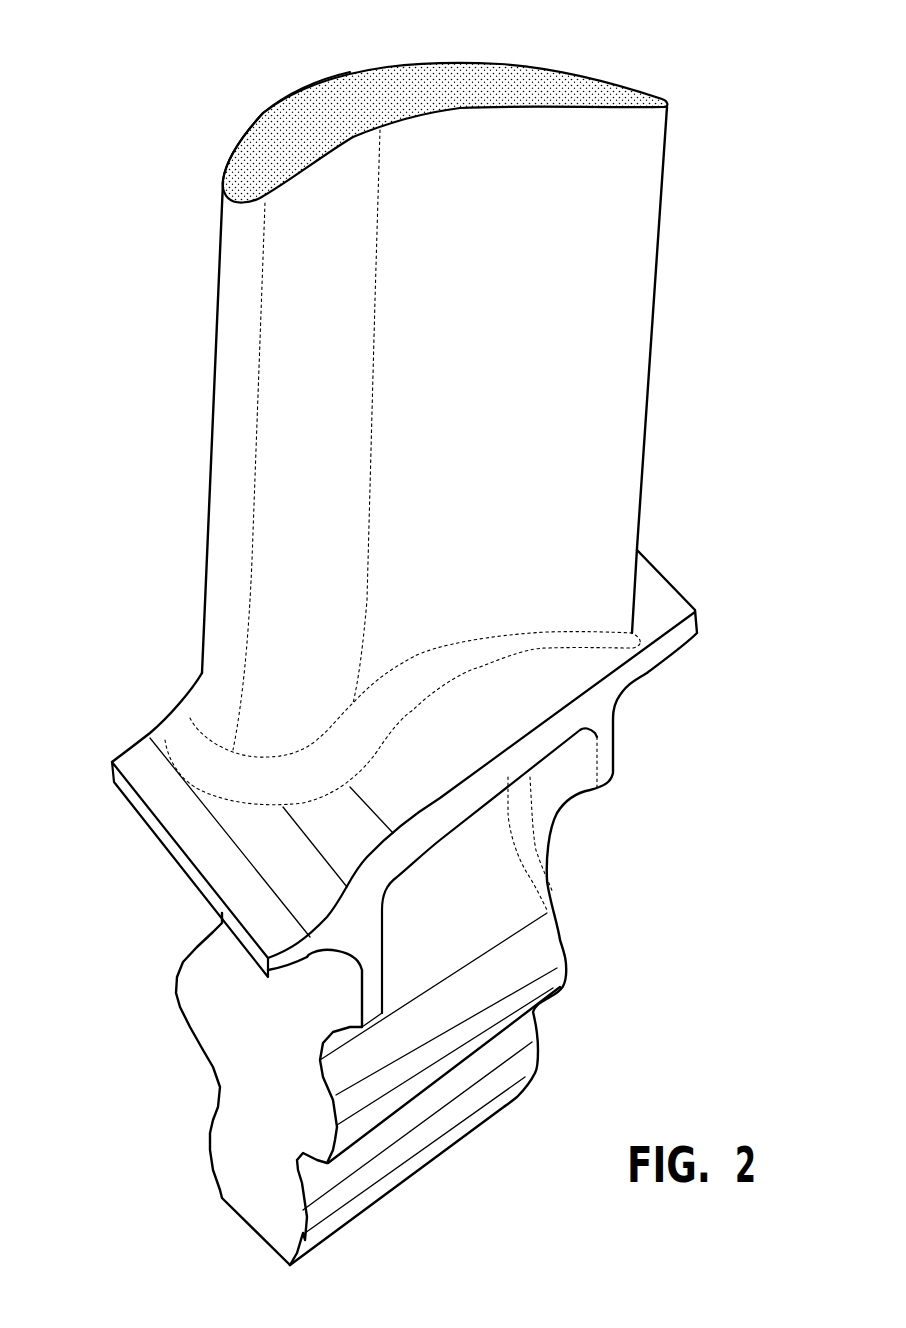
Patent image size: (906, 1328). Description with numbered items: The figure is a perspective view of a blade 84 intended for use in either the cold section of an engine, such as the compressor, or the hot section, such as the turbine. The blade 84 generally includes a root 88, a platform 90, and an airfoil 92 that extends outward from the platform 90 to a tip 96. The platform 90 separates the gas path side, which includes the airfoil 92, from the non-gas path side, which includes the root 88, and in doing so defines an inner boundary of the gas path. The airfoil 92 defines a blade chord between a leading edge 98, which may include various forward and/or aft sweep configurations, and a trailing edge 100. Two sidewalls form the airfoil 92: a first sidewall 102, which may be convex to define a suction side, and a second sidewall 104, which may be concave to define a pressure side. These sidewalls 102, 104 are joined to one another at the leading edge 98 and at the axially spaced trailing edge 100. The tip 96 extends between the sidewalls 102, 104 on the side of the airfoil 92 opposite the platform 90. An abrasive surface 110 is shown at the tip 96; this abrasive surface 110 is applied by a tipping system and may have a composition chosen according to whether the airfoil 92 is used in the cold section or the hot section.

The blade 84 is at (379, 632).
The root 88 is at (597, 915).
The platform 90 is at (690, 583).
The airfoil 92 is at (417, 375).
The tip 96 is at (418, 101).
The leading edge 98 is at (208, 535).
The trailing edge 100 is at (660, 392).
The first sidewall 102 is at (248, 128).
The second sidewall 104 is at (613, 157).
The abrasive surface 110 is at (450, 80).